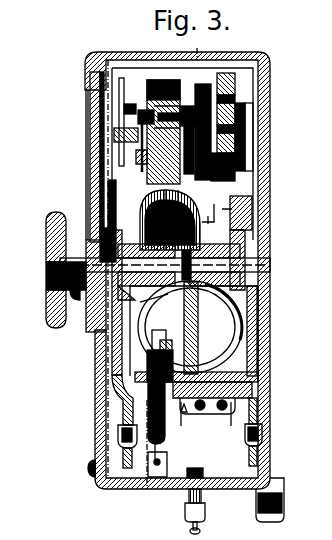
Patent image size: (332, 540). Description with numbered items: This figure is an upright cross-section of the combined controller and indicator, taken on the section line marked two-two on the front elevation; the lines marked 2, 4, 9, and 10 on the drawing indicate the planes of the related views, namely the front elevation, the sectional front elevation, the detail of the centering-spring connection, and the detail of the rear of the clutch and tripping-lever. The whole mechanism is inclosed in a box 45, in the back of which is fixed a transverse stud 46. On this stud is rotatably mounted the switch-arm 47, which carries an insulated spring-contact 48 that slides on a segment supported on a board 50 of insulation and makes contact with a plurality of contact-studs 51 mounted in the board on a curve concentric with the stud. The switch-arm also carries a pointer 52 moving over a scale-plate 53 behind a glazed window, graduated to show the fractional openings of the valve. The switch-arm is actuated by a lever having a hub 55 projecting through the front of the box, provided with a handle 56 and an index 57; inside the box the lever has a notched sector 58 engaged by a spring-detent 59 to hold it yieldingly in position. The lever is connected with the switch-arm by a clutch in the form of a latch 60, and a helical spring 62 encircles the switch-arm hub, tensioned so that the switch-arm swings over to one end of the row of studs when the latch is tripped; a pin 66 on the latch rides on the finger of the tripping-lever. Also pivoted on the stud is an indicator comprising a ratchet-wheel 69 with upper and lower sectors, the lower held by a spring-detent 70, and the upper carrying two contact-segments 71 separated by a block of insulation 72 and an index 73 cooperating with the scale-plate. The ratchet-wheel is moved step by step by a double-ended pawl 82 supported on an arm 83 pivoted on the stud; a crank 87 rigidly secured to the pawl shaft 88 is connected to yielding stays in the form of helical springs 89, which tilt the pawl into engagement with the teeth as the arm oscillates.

The section line 2 2 is at (106, 52).
The section line 4 4 is at (197, 48).
The section line 9 9 is at (250, 376).
The section line 10 10 is at (181, 255).
The box 45 is at (270, 220).
The transverse stud 46 is at (262, 264).
The switch-arm 47 is at (112, 196).
The insulated spring-contact 48 is at (140, 154).
The board of insulation 50 is at (178, 96).
The contact-studs 51 is at (131, 125).
The pointer 52 is at (114, 136).
The scale-plate 53 is at (124, 114).
The hub 55 is at (92, 296).
The handle 56 is at (54, 316).
The index 57 is at (92, 214).
The notched sector 58 is at (112, 371).
The spring-detent 59 is at (118, 432).
The latch 60 is at (84, 236).
The helical spring 62 is at (112, 322).
The pin 66 is at (190, 200).
The ratchet-wheel 69 is at (248, 345).
The spring-detent 70 is at (258, 449).
The contact-segments 71 is at (192, 146).
The block of insulation 72 is at (250, 106).
The index 73 is at (112, 96).
The double-ended pawl 82 is at (258, 385).
The arm 83 is at (188, 321).
The crank 87 is at (150, 374).
The shaft 88 is at (212, 414).
The helical springs 89 is at (166, 432).